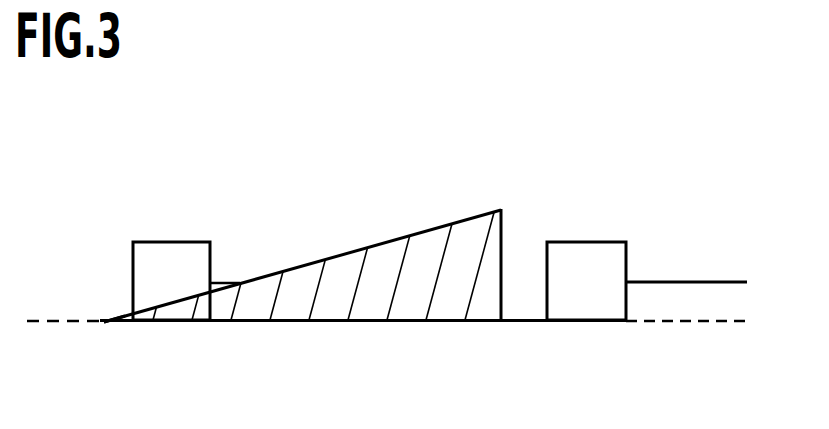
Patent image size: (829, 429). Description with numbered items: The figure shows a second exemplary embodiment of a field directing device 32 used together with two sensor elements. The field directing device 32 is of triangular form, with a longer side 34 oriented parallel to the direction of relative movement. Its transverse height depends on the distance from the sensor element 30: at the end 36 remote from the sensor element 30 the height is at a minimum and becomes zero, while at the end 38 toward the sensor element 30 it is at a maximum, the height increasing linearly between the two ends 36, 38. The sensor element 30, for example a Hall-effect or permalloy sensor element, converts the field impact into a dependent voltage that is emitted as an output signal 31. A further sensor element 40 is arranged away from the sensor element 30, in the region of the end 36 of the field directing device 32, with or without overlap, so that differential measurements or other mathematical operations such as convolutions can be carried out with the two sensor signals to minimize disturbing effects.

The sensor element 30 is at (595, 277).
The output signal 31 is at (703, 282).
The field directing device 32 is at (378, 270).
The longer side 34 is at (372, 323).
The end 36 is at (107, 322).
The end 38 is at (504, 243).
The further sensor element 40 is at (155, 263).